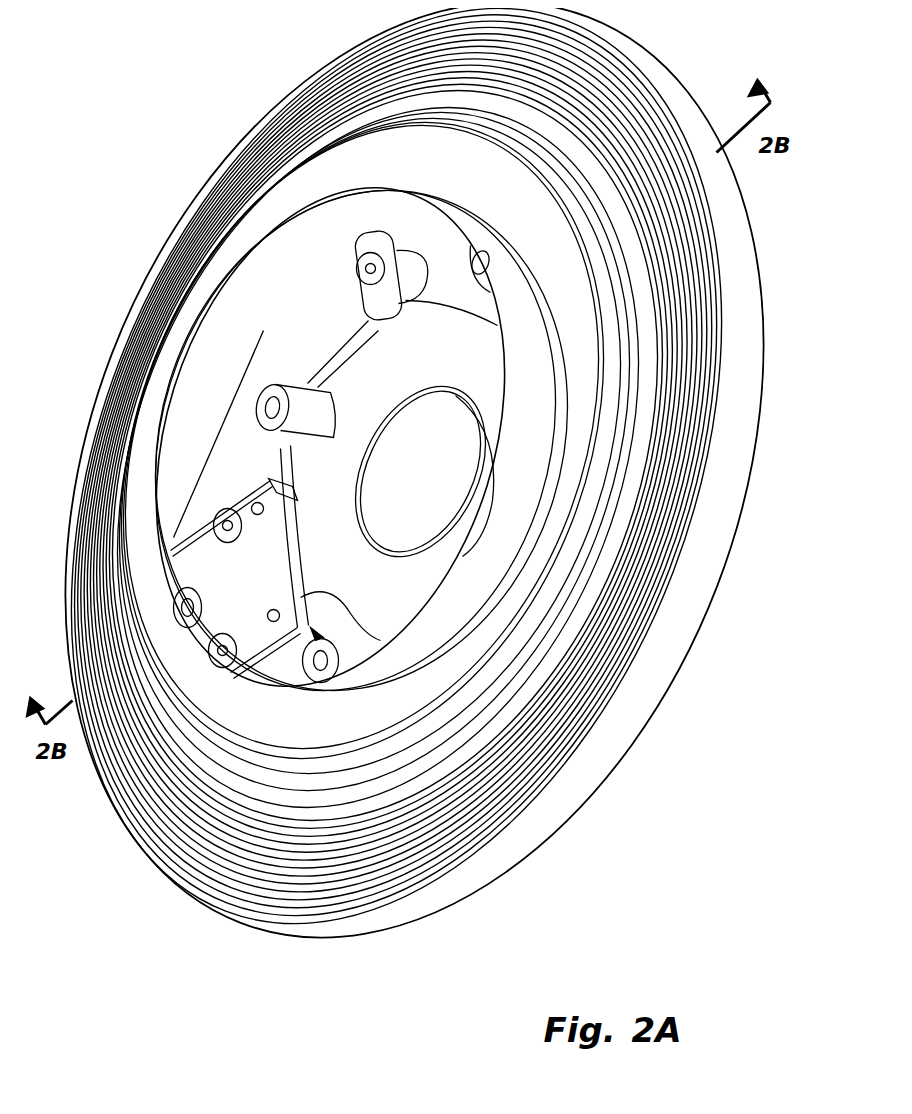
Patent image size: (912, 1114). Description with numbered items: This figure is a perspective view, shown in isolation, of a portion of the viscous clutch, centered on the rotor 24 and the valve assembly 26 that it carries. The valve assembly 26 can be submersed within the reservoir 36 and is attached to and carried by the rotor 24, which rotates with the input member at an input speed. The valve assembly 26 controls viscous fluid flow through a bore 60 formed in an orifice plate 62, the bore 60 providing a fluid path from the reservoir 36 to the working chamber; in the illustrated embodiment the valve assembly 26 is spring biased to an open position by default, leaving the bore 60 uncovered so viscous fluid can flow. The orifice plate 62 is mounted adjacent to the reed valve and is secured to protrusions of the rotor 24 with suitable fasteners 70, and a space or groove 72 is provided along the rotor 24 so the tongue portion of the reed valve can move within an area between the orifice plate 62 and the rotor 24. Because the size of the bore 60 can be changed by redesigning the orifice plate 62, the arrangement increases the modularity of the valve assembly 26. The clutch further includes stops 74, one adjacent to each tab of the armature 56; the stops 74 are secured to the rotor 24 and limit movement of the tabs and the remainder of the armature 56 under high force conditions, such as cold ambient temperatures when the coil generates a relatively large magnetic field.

The rotor 24 is at (712, 545).
The valve assembly 26 is at (397, 383).
The reservoir 36 is at (208, 270).
The armature 56 is at (480, 352).
The bore 60 is at (183, 598).
The orifice plate 62 is at (195, 567).
The fasteners 70 is at (238, 527).
The groove 72 is at (262, 480).
The stops 74 is at (365, 320).